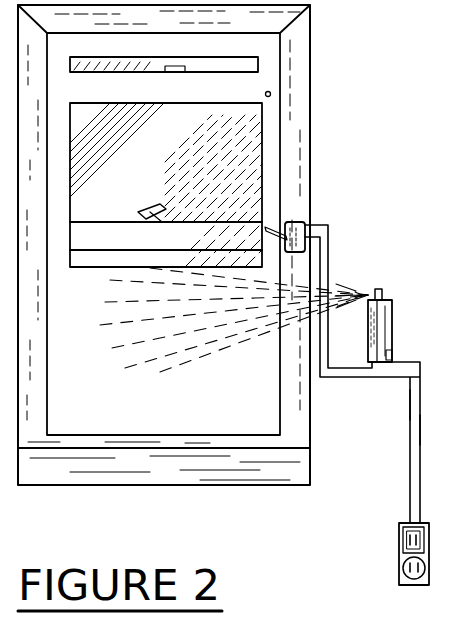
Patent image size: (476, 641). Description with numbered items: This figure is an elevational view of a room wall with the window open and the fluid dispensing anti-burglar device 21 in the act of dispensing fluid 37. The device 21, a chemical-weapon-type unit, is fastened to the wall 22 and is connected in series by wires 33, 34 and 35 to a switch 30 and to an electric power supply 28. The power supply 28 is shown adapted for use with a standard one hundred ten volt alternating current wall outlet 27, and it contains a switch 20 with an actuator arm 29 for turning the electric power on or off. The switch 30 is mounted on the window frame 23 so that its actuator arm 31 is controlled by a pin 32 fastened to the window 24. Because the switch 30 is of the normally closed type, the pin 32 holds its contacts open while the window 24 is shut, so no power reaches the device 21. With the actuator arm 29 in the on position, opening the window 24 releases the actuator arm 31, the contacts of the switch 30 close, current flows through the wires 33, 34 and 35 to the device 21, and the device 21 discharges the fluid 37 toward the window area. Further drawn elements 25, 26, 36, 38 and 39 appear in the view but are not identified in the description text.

The switch 20 is at (400, 530).
The fluid dispensing anti-burglar device 21 is at (380, 330).
The wall 22 is at (325, 56).
The window frame 23 is at (290, 18).
The window 24 is at (265, 138).
The shade pocket 25 is at (113, 45).
The sensor 26 is at (143, 212).
The wall outlet 27 is at (398, 578).
The electric power supply 28 is at (400, 546).
The actuator arm 29 is at (394, 544).
The switch 30 is at (305, 229).
The actuator arm 31 is at (265, 227).
The pin 32 is at (271, 94).
The wire 33 is at (329, 257).
The wire 34 is at (420, 405).
The wire 35 is at (410, 430).
The direction arrow 36 is at (245, 343).
The fluid 37 is at (148, 340).
The plug 38 is at (383, 296).
The connector 39 is at (393, 353).